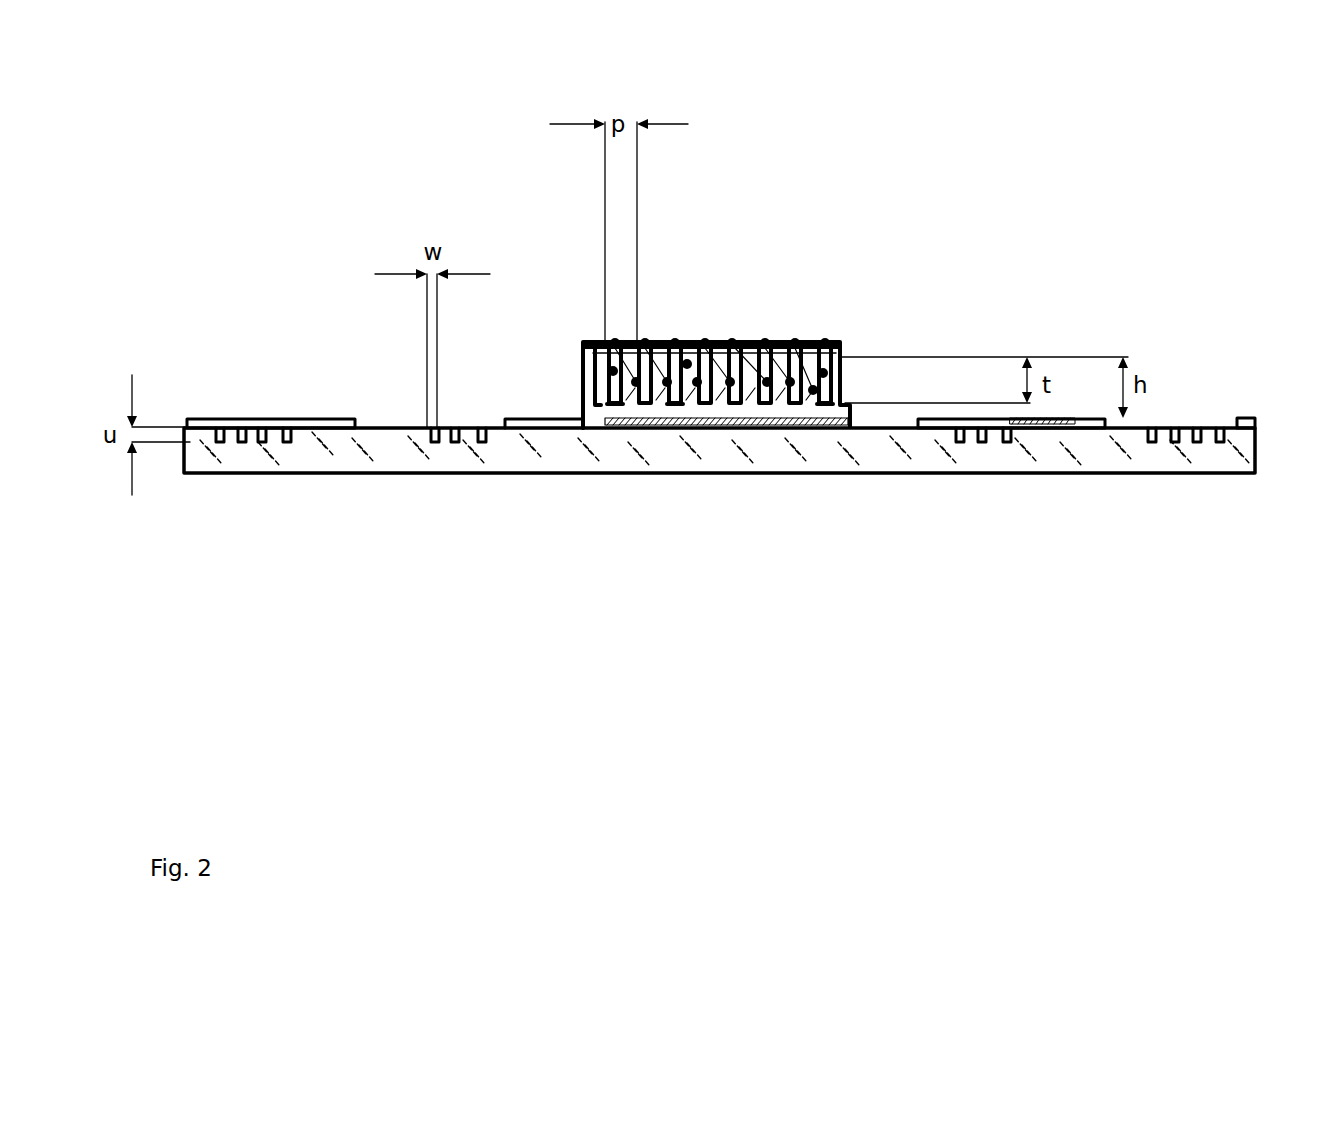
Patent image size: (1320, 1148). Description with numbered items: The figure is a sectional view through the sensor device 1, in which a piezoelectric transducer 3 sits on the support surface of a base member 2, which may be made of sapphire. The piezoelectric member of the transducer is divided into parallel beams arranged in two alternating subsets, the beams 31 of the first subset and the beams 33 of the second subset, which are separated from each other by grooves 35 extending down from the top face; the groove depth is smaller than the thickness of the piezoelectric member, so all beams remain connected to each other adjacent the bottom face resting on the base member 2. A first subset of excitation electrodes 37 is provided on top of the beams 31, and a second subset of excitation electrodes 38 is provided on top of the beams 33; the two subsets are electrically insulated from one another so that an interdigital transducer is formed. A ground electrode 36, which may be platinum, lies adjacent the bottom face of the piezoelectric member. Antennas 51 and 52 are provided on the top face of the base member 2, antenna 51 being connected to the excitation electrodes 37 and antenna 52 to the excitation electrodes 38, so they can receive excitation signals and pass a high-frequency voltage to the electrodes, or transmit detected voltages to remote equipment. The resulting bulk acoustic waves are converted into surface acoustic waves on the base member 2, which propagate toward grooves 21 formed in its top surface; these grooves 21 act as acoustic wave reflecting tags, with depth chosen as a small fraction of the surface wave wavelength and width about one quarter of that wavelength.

The sensor device 1 is at (350, 307).
The base member 2 is at (1232, 476).
The piezoelectric transducer 3 is at (726, 400).
The grooves 21 is at (1218, 447).
The beams of the first subset 31 is at (749, 390).
The beams of the second subset 33 is at (817, 393).
The grooves 35 is at (668, 398).
The ground electrode 36 is at (803, 427).
The excitation electrodes of the first subset 37 is at (795, 343).
The excitation electrodes of the second subset 38 is at (825, 343).
The antenna 51 is at (968, 418).
The antenna 52 is at (255, 415).